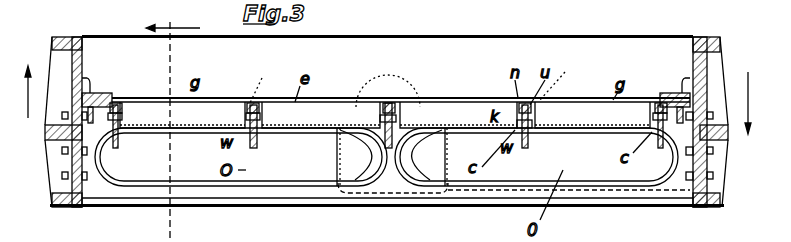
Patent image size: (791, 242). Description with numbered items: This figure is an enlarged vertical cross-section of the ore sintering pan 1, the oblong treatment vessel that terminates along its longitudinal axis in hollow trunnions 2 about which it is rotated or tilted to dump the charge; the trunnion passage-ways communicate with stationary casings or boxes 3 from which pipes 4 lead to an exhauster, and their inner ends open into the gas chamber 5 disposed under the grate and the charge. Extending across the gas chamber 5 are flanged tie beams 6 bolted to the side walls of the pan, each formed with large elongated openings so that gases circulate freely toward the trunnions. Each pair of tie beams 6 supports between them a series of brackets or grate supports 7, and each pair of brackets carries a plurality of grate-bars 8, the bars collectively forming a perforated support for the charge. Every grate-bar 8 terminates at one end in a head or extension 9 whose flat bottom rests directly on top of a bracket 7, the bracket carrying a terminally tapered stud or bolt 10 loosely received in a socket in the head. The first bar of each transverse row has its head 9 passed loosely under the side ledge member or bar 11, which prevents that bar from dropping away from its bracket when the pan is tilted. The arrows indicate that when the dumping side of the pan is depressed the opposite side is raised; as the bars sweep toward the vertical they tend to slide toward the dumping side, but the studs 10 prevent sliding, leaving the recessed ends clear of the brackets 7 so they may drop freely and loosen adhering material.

The pan 1 is at (722, 50).
The hollow trunnions 2 is at (440, 170).
The stationary casings or boxes 3 is at (362, 193).
The pipes 4 is at (173, 122).
The gas chamber 5 is at (606, 162).
The flanged tie beams 6 is at (632, 190).
The brackets or grate supports 7 is at (118, 146).
The grate-bars 8 is at (210, 112).
The head or extension 9 is at (118, 106).
The stud or bolt 10 is at (414, 79).
The side ledge member or bar 11 is at (101, 93).